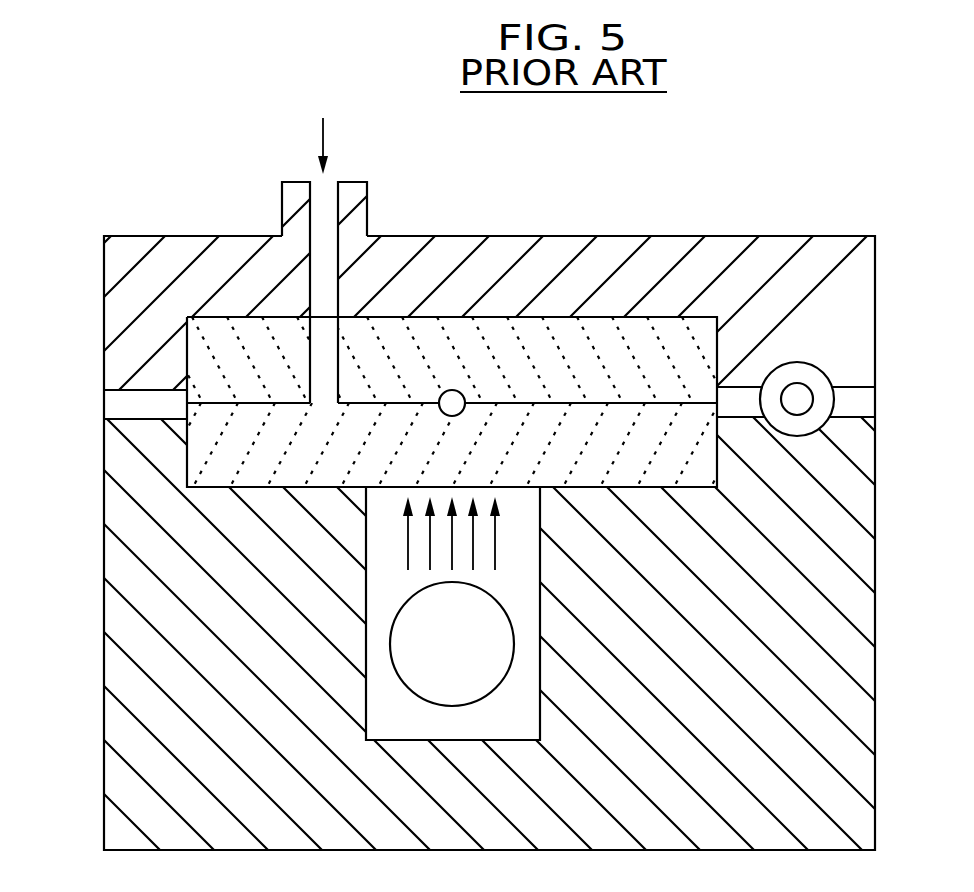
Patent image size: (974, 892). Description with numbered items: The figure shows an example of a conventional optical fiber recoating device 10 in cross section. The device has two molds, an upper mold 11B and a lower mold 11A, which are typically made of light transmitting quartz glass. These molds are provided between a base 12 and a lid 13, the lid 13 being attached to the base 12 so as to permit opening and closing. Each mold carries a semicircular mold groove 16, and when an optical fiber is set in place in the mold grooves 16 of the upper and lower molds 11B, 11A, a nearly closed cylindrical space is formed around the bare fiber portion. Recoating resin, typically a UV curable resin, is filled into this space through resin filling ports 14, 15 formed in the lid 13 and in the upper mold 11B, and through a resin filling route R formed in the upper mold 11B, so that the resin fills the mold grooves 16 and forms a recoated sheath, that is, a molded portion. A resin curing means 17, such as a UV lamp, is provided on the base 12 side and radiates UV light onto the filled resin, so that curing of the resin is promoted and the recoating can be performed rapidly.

The recoating device 10 is at (133, 214).
The lower mold 11A is at (684, 457).
The upper mold 11B is at (627, 355).
The base 12 is at (874, 590).
The lid 13 is at (875, 284).
The resin filling port 14 is at (312, 254).
The resin filling port 15 is at (313, 348).
The mold groove 16 is at (456, 391).
The resin curing means 17 is at (510, 617).
The resin filling route R is at (383, 412).